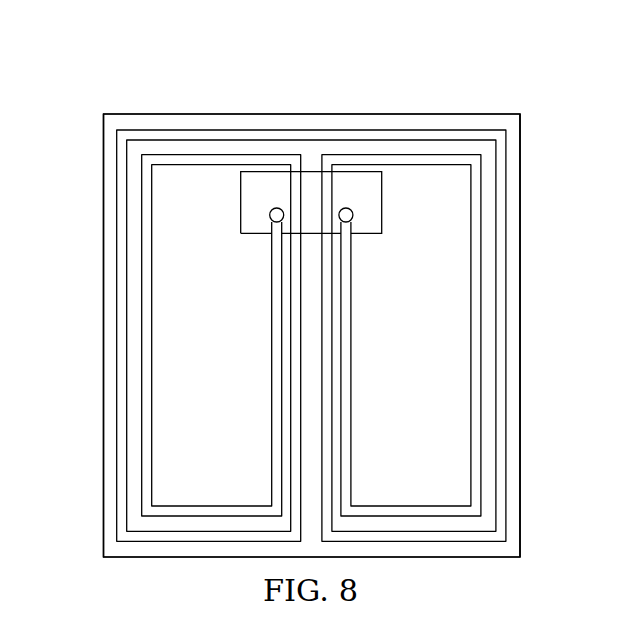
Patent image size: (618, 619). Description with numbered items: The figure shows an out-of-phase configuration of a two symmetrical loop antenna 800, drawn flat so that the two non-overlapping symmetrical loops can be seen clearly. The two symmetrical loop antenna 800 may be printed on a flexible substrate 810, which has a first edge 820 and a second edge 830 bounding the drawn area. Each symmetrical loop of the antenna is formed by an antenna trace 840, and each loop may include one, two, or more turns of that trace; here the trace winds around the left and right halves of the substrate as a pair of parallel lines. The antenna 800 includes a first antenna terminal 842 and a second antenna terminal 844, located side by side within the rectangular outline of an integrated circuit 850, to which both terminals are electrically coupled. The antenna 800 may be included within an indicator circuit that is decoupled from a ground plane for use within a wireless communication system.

The two symmetrical loop antenna 800 is at (296, 87).
The flexible substrate 810 is at (207, 173).
The first edge 820 is at (521, 113).
The second edge 830 is at (102, 113).
The antenna trace 840 is at (147, 337).
The first antenna terminal 842 is at (354, 213).
The second antenna terminal 844 is at (268, 213).
The integrated circuit 850 is at (373, 197).